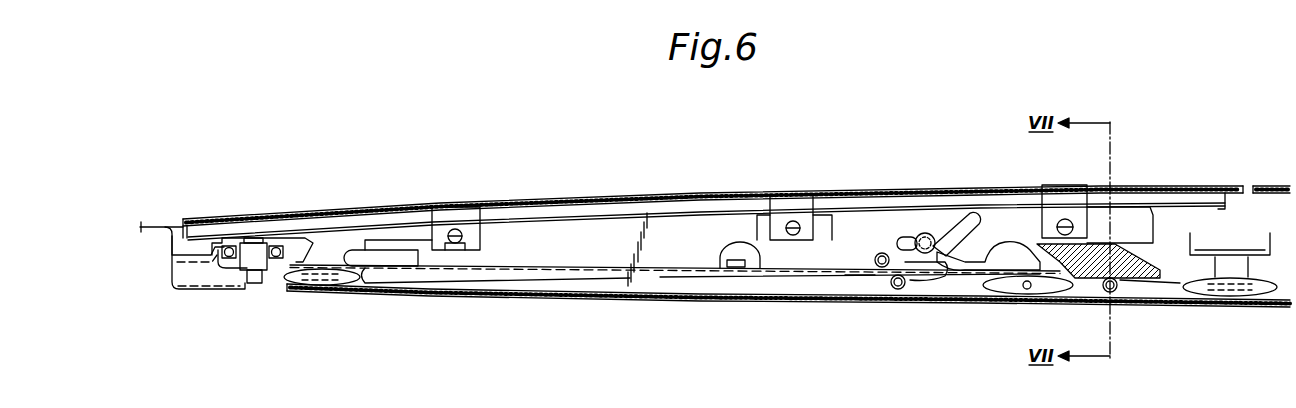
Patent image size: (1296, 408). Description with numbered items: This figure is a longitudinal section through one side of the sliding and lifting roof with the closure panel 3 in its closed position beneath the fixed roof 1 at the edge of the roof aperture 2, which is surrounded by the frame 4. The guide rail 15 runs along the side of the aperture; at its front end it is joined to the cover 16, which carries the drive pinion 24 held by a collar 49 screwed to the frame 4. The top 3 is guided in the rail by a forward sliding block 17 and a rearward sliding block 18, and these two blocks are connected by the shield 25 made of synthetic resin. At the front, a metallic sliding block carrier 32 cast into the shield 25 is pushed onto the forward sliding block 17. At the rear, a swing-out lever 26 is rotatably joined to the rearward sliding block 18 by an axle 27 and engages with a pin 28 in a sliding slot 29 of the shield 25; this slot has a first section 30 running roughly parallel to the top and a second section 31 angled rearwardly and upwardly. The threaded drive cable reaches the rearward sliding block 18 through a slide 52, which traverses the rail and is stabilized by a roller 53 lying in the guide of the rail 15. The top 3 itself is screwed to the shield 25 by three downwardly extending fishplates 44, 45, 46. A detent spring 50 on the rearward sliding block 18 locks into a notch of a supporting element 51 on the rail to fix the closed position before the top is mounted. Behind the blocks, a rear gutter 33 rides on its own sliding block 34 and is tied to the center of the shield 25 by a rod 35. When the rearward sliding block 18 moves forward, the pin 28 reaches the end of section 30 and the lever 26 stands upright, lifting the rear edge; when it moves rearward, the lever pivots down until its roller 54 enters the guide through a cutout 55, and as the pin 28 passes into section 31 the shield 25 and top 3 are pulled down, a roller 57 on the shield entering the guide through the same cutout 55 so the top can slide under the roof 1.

The roof 1 is at (151, 225).
The roof aperture 2 is at (178, 226).
The closure panel 3 is at (578, 194).
The frame 4 is at (165, 258).
The guide rail 15 is at (556, 269).
The cover 16 is at (296, 237).
The forward sliding block 17 is at (299, 285).
The rearward sliding block 18 is at (1005, 287).
The pinion 24 is at (243, 240).
The shield 25 is at (692, 253).
The swing-out lever 26 is at (990, 244).
The axle 27 is at (1027, 290).
The pin 28 is at (920, 232).
The sliding slot 29 is at (956, 222).
The first section of sliding slot 30 is at (905, 238).
The second section of sliding slot 31 is at (968, 262).
The sliding block carrier 32 is at (348, 249).
The rear gutter 33 is at (1268, 258).
The sliding block 34 is at (1205, 287).
The rod 35 is at (820, 266).
The fishplate 44 is at (453, 215).
The fishplate 45 is at (787, 207).
The fishplate 46 is at (1055, 196).
The collar 49 is at (235, 267).
The spring 50 is at (1085, 266).
The supporting element 51 is at (1150, 276).
The slide 52 is at (1100, 240).
The roller 53 is at (1115, 291).
The roller 54 is at (898, 290).
The cutout 55 is at (868, 276).
The roller 57 is at (880, 252).